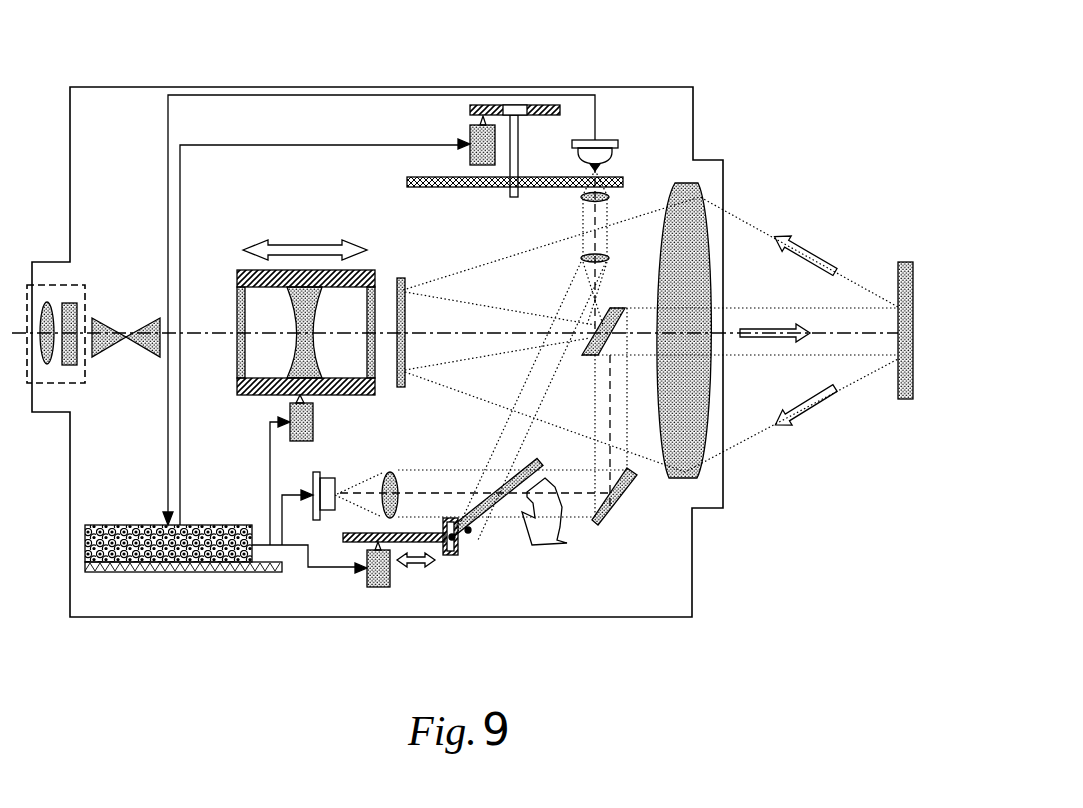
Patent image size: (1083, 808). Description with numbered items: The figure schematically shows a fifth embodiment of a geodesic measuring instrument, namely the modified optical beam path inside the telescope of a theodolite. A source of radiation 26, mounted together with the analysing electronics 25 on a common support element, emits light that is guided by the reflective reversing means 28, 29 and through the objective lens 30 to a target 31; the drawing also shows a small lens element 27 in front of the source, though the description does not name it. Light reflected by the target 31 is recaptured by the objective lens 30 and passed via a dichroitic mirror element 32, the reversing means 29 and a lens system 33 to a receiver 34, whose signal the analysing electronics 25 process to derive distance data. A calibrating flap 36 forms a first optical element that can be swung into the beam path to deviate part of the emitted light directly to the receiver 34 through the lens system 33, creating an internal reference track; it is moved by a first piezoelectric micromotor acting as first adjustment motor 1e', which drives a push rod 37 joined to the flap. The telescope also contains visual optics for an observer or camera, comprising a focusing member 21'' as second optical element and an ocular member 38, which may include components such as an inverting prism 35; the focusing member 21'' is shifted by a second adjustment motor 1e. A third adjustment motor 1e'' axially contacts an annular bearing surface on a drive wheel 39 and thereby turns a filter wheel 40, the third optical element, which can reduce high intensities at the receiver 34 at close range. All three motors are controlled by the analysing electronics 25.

The second adjustment motor 1e is at (255, 444).
The first adjustment motor 1e' is at (416, 600).
The third adjustment motor 1e'' is at (387, 130).
The focusing member 21'' is at (354, 321).
The analysing electronics 25 is at (210, 548).
The source of radiation 26 is at (330, 498).
The condenser lens 27 is at (390, 473).
The reflective reversing means 28 is at (622, 493).
The reflective reversing means 29 is at (603, 345).
The objective lens 30 is at (700, 382).
The target 31 is at (900, 262).
The dichroitic mirror element 32 is at (403, 387).
The lens system 33 is at (605, 253).
The receiver 34 is at (600, 150).
The inverting prism 35 is at (130, 322).
The calibrating flap 36 is at (497, 502).
The push rod 37 is at (452, 557).
The ocular member 38 is at (65, 283).
The drive wheel 39 is at (483, 118).
The filter wheel 40 is at (418, 177).